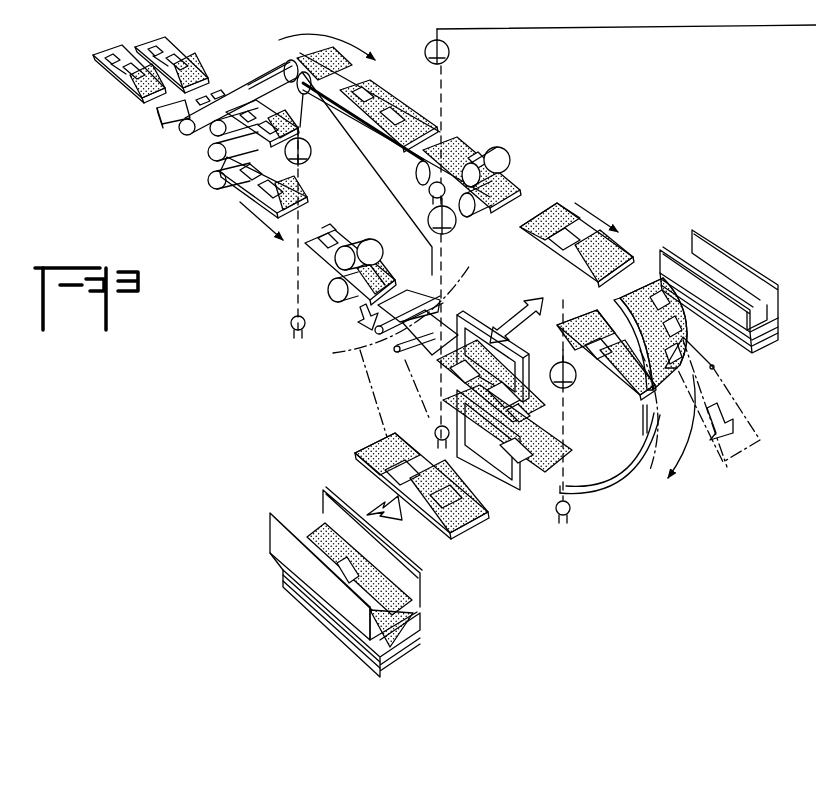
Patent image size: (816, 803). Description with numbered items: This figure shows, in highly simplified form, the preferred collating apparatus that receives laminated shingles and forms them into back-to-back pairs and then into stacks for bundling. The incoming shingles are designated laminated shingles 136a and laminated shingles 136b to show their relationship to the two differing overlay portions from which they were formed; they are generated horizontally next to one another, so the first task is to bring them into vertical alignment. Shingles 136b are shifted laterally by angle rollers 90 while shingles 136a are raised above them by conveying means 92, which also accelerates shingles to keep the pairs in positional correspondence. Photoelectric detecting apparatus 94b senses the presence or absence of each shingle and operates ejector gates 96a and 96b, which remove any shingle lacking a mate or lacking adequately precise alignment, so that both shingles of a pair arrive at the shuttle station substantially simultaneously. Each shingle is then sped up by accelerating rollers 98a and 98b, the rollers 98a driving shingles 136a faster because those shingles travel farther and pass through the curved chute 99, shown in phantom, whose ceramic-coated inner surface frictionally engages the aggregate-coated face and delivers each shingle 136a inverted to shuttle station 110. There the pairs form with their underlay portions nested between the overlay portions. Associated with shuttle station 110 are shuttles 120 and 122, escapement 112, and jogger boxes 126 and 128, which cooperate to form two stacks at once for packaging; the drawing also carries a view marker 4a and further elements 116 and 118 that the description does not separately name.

The section line / view reference 4a is at (465, 82).
The angle rollers 90 is at (193, 158).
The conveying means 92 is at (304, 199).
The photoelectric detecting apparatus 94b is at (306, 196).
The ejector gate 96a is at (715, 368).
The ejector gate 96b is at (368, 346).
The accelerating rollers 98a is at (500, 158).
The accelerating rollers 98b is at (362, 250).
The curved chute 99 is at (640, 430).
The shuttle station 110 is at (327, 453).
The escapement 112 is at (461, 257).
The sensor 116 is at (456, 236).
The sensor 118 is at (577, 386).
The shuttle 120 is at (491, 348).
The shuttle 122 is at (520, 490).
The jogger box 126 is at (270, 516).
The jogger box 128 is at (703, 231).
The laminated shingles 136a is at (125, 88).
The laminated shingles 136b is at (186, 52).